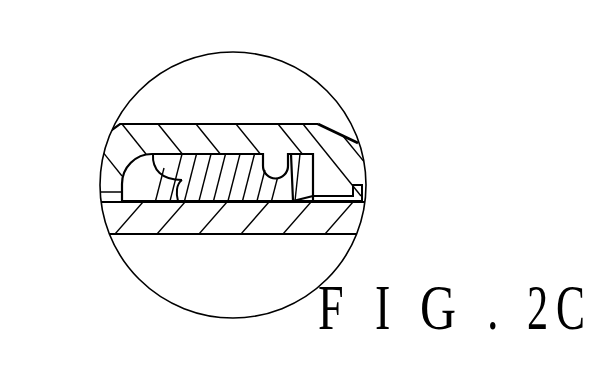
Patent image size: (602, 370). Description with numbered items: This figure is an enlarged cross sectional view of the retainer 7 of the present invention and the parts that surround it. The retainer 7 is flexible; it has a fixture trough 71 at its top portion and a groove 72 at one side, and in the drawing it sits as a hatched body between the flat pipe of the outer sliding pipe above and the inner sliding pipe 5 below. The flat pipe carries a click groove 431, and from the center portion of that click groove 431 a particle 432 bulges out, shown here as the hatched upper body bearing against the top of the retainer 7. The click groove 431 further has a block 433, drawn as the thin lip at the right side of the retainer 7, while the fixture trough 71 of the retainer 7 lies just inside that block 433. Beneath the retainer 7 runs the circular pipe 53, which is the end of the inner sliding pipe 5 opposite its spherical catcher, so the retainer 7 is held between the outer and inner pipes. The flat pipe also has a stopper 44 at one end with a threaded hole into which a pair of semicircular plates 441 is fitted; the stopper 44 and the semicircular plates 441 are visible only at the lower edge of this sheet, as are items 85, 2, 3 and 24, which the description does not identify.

The particle 432 is at (281, 163).
The retainer 7 is at (228, 173).
The groove 72 is at (168, 173).
The click groove 431 is at (157, 185).
The fixture trough 71 is at (310, 155).
The block 433 is at (340, 190).
The circular pipe 53 is at (333, 222).
The adjacent figure element (partial) 85 is at (88, 369).
The semicircular plates 441 is at (10, 369).
The stopper 44 is at (27, 366).
The adjacent figure element (partial) 2 is at (225, 366).
The adjacent figure element (partial) 3 is at (270, 360).
The adjacent figure element (partial) 24 is at (318, 369).
The inner sliding pipe 5 is at (419, 367).